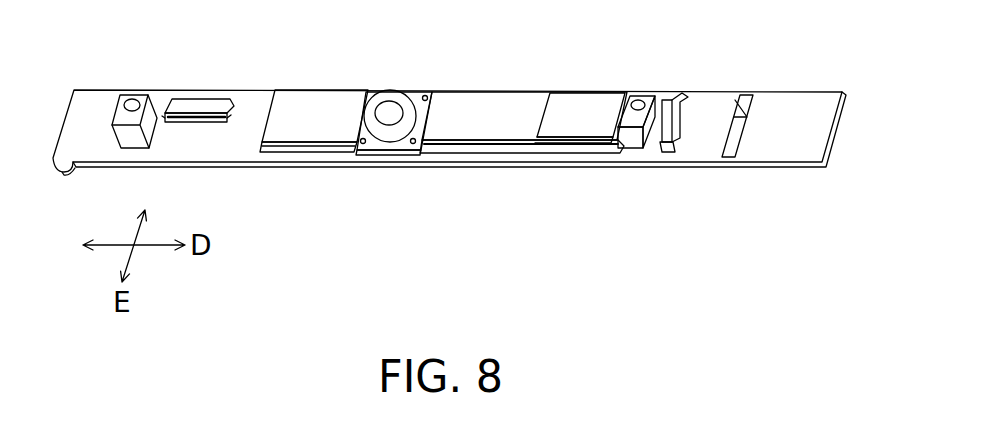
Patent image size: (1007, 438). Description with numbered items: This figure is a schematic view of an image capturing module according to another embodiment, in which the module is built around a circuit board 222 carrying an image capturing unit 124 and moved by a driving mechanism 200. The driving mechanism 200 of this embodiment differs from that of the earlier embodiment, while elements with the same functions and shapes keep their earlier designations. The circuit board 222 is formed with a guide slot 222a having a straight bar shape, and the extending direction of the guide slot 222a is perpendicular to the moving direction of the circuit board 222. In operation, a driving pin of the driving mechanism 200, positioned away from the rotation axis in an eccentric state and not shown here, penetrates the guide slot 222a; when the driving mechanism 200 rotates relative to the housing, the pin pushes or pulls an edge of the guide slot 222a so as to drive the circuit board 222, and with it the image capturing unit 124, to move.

The driving mechanism 200 is at (449, 153).
The circuit board 222 is at (449, 128).
The guide slot 222a is at (745, 116).
The image capturing unit 124 is at (385, 108).